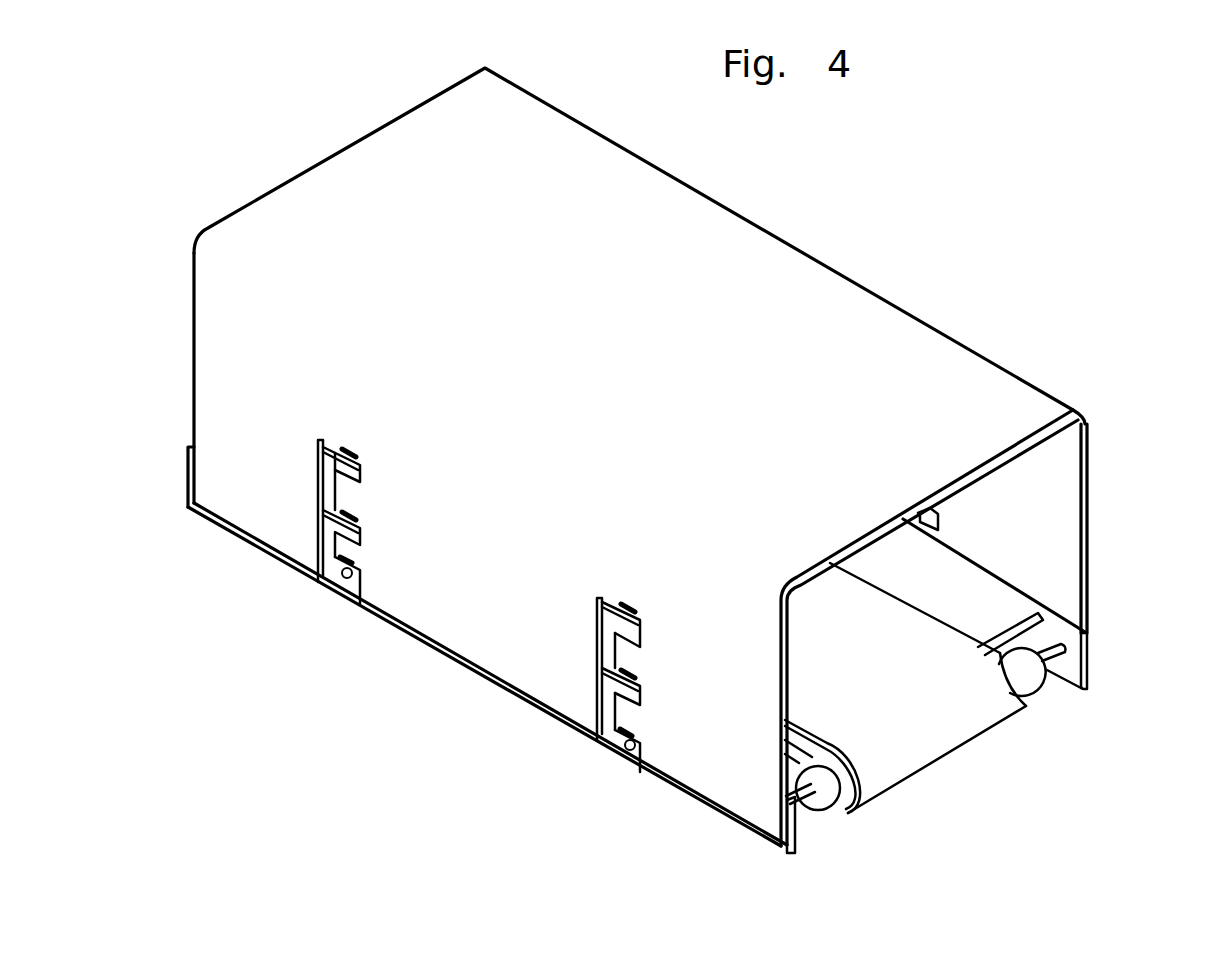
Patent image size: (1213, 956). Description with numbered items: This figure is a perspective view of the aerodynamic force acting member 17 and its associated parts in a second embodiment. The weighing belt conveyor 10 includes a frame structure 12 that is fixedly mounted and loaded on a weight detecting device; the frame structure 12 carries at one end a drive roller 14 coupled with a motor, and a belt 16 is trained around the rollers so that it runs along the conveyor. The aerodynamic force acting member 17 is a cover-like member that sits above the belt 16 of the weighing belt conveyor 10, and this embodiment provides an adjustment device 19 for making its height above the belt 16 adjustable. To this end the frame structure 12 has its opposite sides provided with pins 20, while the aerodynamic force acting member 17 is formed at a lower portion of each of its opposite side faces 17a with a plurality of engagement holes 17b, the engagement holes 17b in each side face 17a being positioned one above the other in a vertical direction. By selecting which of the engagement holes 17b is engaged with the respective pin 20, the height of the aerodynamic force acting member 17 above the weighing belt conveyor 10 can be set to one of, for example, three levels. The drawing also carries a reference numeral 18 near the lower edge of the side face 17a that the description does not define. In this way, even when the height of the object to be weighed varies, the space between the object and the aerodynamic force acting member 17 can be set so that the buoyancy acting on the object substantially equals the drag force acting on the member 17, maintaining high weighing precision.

The weighing belt conveyor 10 is at (971, 708).
The frame structure 12 is at (1078, 666).
The drive roller 14 is at (1040, 690).
The belt 16 is at (920, 774).
The aerodynamic force acting member 17 is at (798, 276).
The side face 17a is at (485, 674).
The engagement hole 17b is at (361, 466).
The edge portion 18 is at (345, 565).
The adjustment device 19 is at (366, 558).
The pin 20 is at (346, 580).